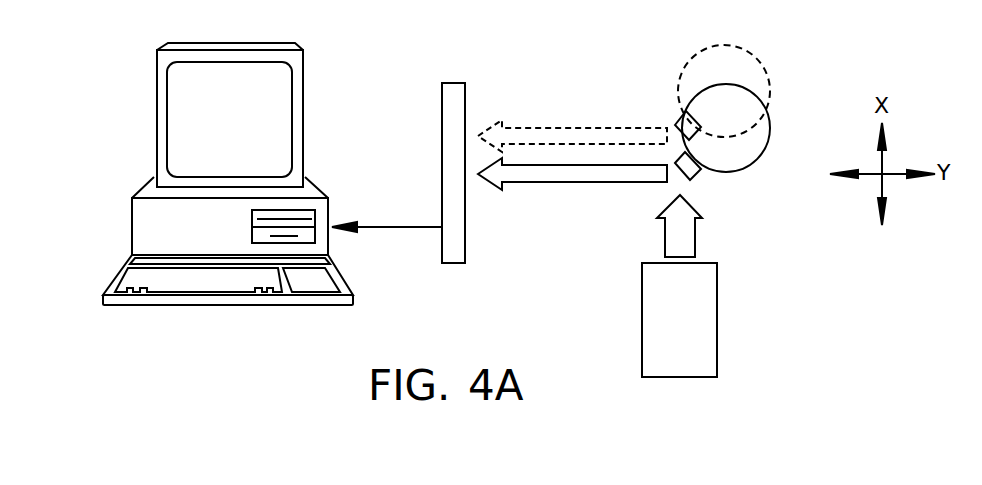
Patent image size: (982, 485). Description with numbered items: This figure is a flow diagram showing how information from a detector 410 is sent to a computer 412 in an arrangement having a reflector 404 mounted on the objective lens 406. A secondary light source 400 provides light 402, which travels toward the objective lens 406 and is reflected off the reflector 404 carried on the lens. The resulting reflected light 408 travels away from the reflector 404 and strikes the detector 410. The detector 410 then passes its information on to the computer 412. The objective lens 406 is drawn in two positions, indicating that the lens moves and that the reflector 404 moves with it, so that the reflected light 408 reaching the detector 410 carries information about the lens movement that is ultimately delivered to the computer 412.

The secondary light source 400 is at (718, 318).
The light 402 is at (697, 233).
The reflector 404 is at (693, 175).
The objective lens 406 is at (770, 128).
The reflected light 408 is at (576, 184).
The detector 410 is at (457, 83).
The computer 412 is at (132, 220).